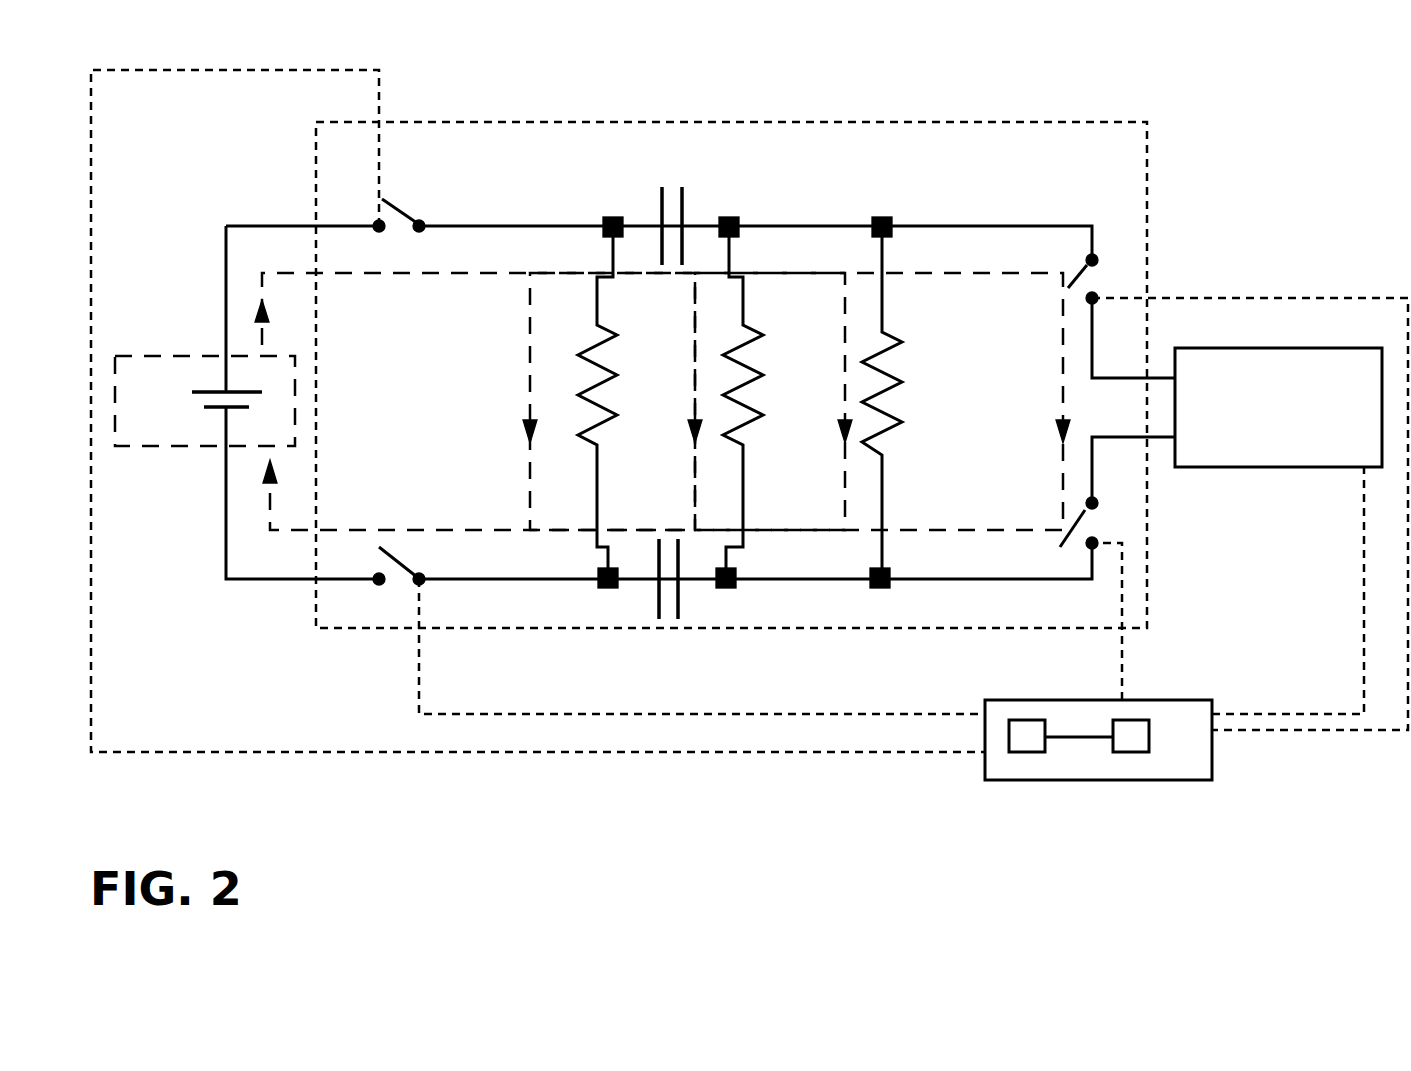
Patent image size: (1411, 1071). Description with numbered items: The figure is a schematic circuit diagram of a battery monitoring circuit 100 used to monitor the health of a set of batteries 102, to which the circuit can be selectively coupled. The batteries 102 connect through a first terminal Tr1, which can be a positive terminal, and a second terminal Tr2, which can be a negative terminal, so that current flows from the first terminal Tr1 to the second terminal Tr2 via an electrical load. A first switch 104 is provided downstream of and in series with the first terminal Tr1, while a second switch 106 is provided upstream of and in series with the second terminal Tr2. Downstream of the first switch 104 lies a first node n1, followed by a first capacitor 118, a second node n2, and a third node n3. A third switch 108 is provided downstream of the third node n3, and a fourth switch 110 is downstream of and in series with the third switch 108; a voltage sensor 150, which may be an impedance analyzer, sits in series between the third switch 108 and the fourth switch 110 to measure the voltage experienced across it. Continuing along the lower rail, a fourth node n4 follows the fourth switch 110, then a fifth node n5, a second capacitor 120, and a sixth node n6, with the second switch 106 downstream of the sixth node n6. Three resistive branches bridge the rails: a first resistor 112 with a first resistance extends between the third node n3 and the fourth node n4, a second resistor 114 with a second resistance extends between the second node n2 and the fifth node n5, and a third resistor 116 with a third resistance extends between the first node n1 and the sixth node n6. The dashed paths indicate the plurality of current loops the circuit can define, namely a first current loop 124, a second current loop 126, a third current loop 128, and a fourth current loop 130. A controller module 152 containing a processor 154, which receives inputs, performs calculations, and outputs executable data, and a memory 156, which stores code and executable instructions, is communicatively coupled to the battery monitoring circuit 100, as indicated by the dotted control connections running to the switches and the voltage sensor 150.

The battery monitoring circuit 100 is at (845, 120).
The set of batteries 102 is at (168, 355).
The first switch 104 is at (398, 208).
The second switch 106 is at (398, 565).
The third switch 108 is at (1068, 290).
The fourth switch 110 is at (1080, 520).
The first resistor 112 is at (893, 398).
The second resistor 114 is at (757, 368).
The third resistor 116 is at (612, 368).
The first capacitor 118 is at (683, 205).
The second capacitor 120 is at (680, 598).
The first current loop 124 is at (840, 355).
The second current loop 126 is at (1060, 480).
The third current loop 128 is at (690, 355).
The fourth current loop 130 is at (525, 378).
The voltage sensor 150 is at (1288, 468).
The controller module 152 is at (1185, 780).
The processor 154 is at (1023, 752).
The memory 156 is at (1130, 752).
The first node n1 is at (608, 220).
The second node n2 is at (740, 218).
The third node n3 is at (887, 218).
The fourth node n4 is at (885, 590).
The fifth node n5 is at (730, 590).
The sixth node n6 is at (603, 590).
The first terminal Tr1 is at (213, 390).
The second terminal Tr2 is at (219, 412).